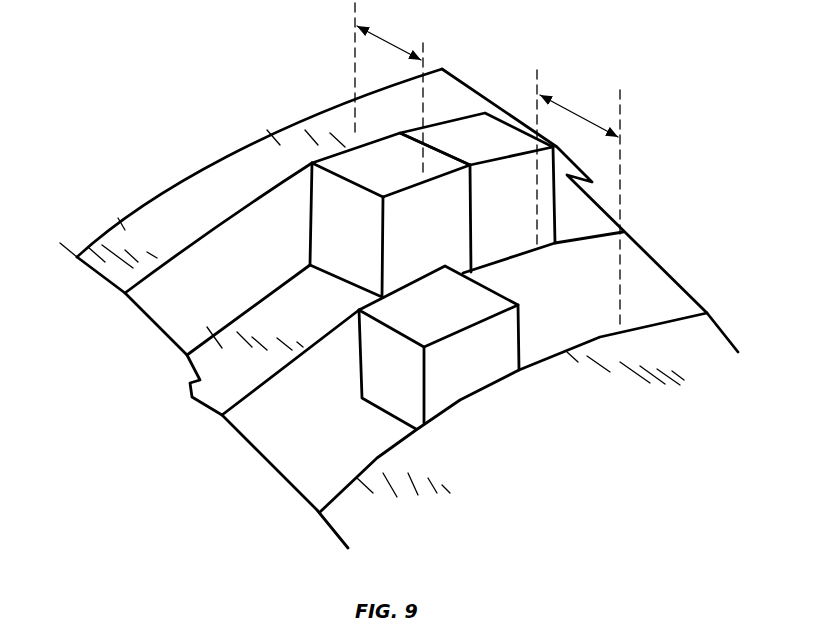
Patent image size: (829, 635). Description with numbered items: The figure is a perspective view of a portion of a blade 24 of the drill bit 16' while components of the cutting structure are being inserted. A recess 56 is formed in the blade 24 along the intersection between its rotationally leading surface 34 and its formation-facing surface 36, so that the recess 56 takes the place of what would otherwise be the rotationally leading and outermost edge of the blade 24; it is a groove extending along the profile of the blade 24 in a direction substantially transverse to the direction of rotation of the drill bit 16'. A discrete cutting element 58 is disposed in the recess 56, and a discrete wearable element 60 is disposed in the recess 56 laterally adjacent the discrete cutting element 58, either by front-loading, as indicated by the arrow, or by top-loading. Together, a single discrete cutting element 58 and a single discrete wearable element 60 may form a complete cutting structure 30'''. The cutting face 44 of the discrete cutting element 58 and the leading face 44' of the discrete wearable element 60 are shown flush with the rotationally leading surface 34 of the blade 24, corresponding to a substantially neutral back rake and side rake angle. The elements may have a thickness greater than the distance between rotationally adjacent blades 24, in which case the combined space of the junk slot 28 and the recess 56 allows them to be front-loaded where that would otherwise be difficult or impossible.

The drill bit 16' is at (399, 285).
The blade 24 is at (117, 219).
The junk slot 28 is at (330, 467).
The cutting structure 30''' is at (732, 219).
The rotationally leading surface 34 is at (322, 418).
The formation-facing surface 36 is at (192, 212).
The cutting face 44 is at (432, 205).
The leading face 44' is at (439, 347).
The recess 56 is at (353, 320).
The discrete cutting element 58 is at (513, 117).
The discrete wearable element 60 is at (470, 130).